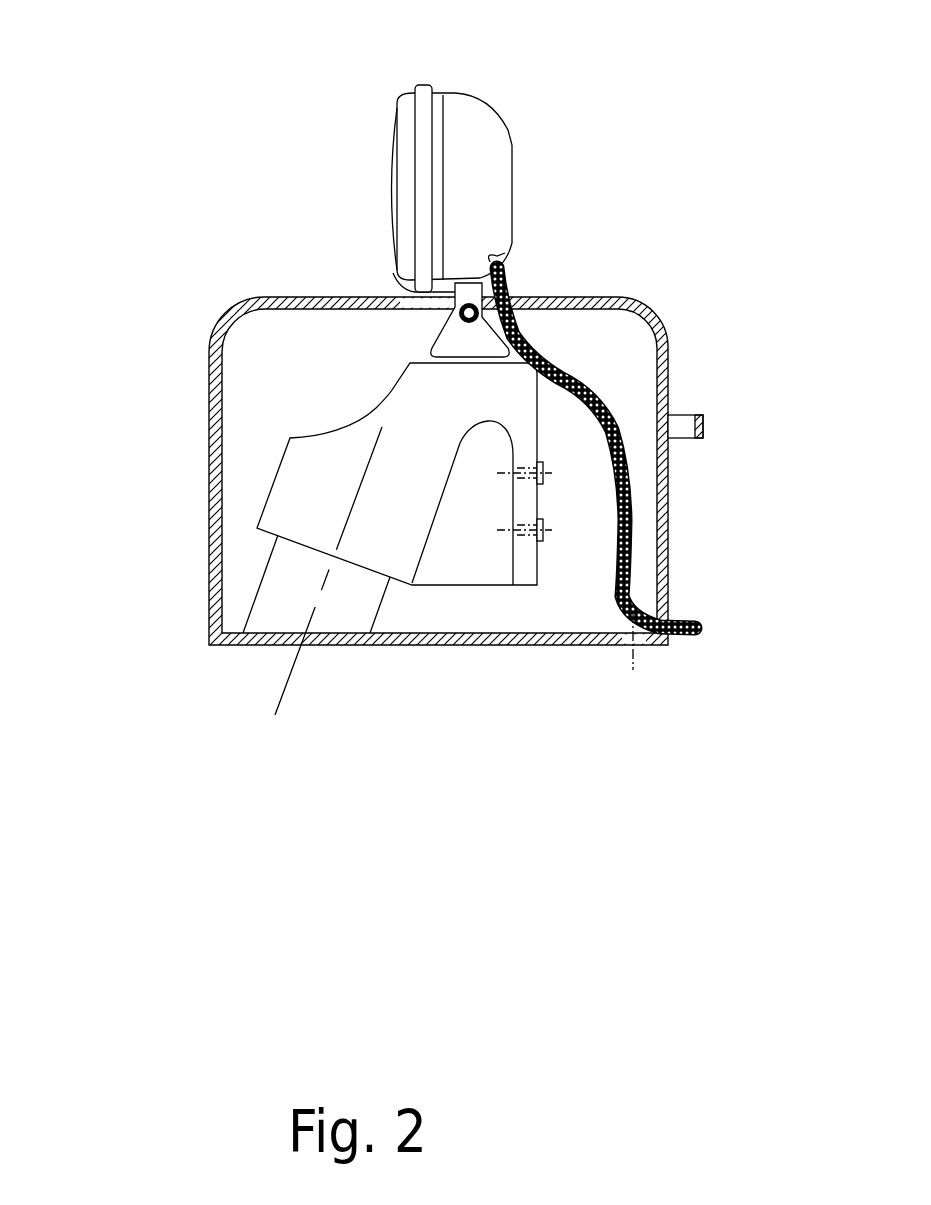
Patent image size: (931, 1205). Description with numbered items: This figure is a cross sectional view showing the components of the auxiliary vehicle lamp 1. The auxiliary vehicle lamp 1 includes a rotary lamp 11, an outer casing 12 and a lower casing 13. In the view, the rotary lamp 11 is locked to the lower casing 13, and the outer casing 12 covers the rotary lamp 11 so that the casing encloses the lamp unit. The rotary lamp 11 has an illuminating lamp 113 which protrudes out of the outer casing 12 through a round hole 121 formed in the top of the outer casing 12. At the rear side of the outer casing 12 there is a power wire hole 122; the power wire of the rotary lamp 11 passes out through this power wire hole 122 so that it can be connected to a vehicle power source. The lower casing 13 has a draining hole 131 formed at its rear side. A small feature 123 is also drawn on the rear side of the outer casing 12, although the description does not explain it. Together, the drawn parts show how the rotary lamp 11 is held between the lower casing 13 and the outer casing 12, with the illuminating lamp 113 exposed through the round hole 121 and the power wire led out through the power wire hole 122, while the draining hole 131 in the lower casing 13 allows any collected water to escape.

The auxiliary vehicle lamp 1 is at (211, 76).
The rotary lamp 11 is at (338, 380).
The illuminating lamp 113 is at (513, 122).
The outer casing 12 is at (217, 327).
The round hole 121 is at (421, 298).
The power wire hole 122 is at (670, 603).
The protrusion 123 is at (687, 427).
The lower casing 13 is at (208, 645).
The draining hole 131 is at (643, 647).